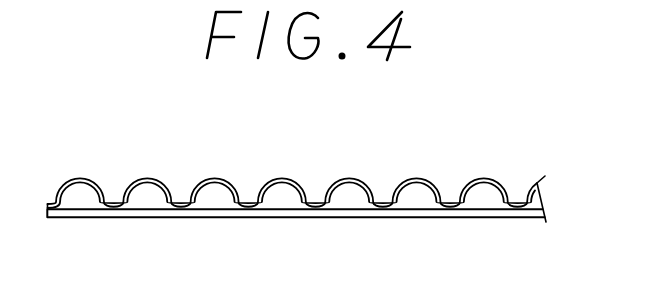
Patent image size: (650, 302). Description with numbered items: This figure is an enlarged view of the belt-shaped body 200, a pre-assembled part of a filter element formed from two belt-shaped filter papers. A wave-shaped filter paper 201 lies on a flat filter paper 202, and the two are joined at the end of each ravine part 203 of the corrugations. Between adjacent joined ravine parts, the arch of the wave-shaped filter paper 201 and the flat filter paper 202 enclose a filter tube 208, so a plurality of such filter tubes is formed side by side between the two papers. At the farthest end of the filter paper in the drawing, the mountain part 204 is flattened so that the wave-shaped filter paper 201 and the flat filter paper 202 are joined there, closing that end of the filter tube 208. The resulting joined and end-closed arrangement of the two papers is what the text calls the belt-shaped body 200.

The belt-shaped body 200 is at (297, 185).
The wave-shaped filter paper 201 is at (431, 183).
The flat filter paper 202 is at (419, 220).
The ravine part 203 is at (317, 206).
The mountain part 204 is at (280, 179).
The filter tube 208 is at (277, 205).